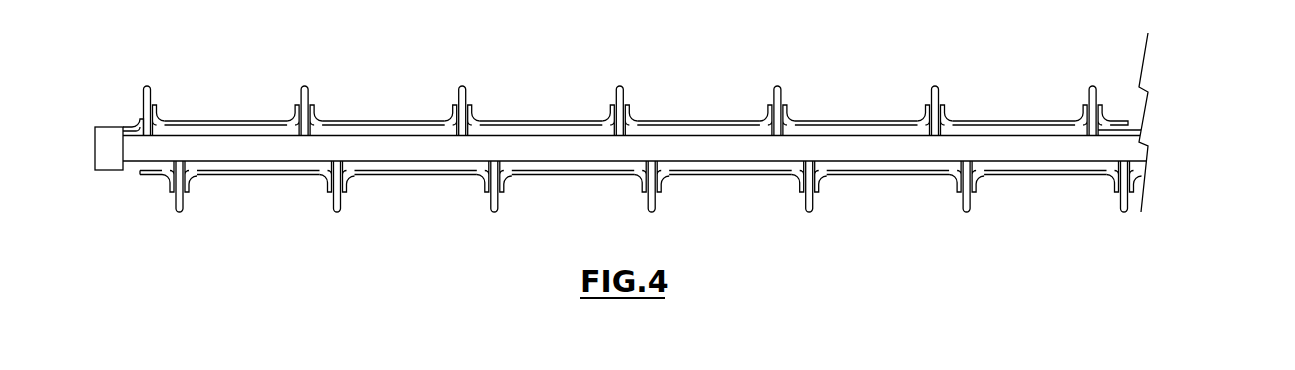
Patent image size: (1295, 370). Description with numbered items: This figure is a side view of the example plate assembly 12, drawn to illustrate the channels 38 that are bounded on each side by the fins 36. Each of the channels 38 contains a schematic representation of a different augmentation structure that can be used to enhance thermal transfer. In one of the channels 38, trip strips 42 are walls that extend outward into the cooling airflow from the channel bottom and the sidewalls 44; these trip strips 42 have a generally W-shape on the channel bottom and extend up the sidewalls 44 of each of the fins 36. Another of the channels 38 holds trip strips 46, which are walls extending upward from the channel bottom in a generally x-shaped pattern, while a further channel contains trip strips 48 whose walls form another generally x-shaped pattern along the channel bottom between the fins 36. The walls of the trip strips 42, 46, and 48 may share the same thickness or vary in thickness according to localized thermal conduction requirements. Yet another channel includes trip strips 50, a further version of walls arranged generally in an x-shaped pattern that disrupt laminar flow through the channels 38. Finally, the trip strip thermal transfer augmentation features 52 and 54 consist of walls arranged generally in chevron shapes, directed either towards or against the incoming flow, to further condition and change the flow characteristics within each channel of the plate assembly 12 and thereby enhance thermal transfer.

The plate assembly 12 is at (1189, 84).
The fins 36 is at (148, 70).
The channels 38 is at (222, 200).
The trip strips 42 is at (183, 100).
The sidewalls 44 is at (316, 78).
The trip strips 46 is at (338, 105).
The trip strips 48 is at (549, 109).
The trip strips 50 is at (712, 109).
The trip strip thermal transfer augmentation features 52 is at (855, 109).
The trip strip thermal transfer augmentation features 54 is at (1015, 109).